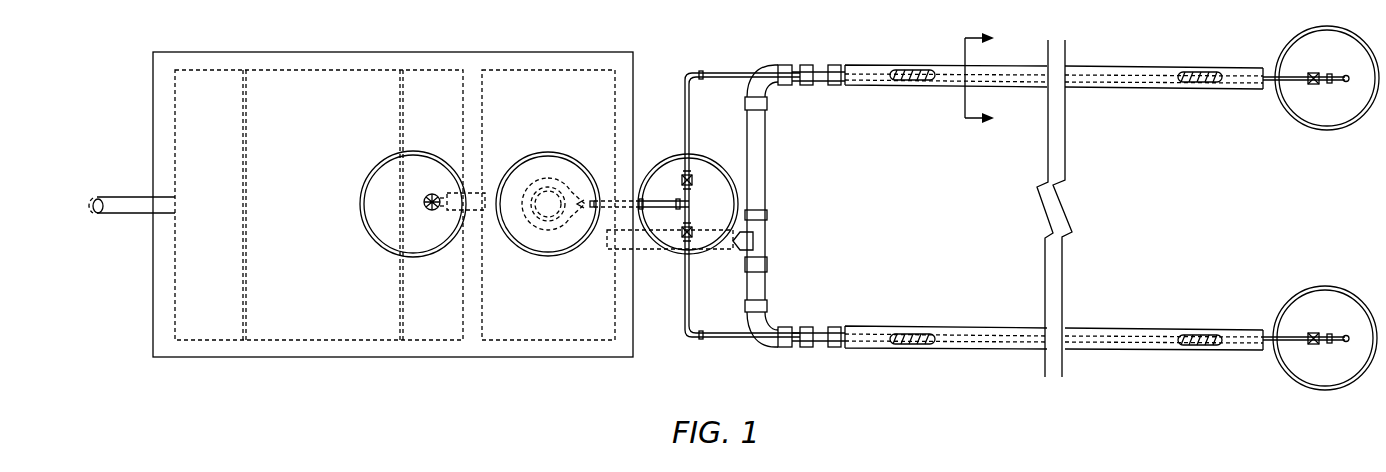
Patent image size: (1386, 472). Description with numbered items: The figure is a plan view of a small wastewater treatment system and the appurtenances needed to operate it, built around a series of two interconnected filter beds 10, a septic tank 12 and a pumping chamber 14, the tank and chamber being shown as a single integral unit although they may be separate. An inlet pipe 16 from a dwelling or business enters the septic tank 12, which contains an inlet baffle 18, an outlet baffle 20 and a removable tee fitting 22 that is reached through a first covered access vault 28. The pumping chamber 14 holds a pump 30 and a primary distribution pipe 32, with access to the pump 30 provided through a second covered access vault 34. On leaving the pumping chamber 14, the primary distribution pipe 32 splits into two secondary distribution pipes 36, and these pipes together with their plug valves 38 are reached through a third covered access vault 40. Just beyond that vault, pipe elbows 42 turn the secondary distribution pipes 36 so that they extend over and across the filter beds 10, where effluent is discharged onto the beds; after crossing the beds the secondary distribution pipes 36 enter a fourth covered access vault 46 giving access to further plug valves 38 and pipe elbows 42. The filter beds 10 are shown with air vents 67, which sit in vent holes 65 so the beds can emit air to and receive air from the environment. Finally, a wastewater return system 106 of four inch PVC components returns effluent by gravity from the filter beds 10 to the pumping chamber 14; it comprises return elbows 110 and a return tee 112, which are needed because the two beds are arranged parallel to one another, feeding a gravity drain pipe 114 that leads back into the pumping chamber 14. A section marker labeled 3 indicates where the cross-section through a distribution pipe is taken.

The filter beds 10 is at (1114, 56).
The septic tank 12 is at (347, 322).
The pumping chamber 14 is at (565, 322).
The inlet pipe 16 is at (140, 215).
The inlet baffle 18 is at (247, 268).
The outlet baffle 20 is at (400, 283).
The removable tee fitting 22 is at (432, 194).
The first covered access vault 28 is at (362, 185).
The pump 30 is at (556, 186).
The primary distribution pipe 32 is at (650, 203).
The second covered access vault 34 is at (560, 256).
The secondary distribution pipes 36 is at (720, 73).
The plug valves 38 is at (693, 181).
The third covered access vault 40 is at (700, 157).
The pipe elbows 42 is at (1338, 74).
The fourth covered access vault 46 is at (1292, 118).
The vent holes 65 is at (890, 348).
The air vents 67 is at (906, 70).
The wastewater return system 106 is at (805, 214).
The return elbows 110 is at (766, 322).
The return tee 112 is at (767, 240).
The gravity drain pipe 114 is at (640, 250).
The section line 3- 3 is at (990, 80).